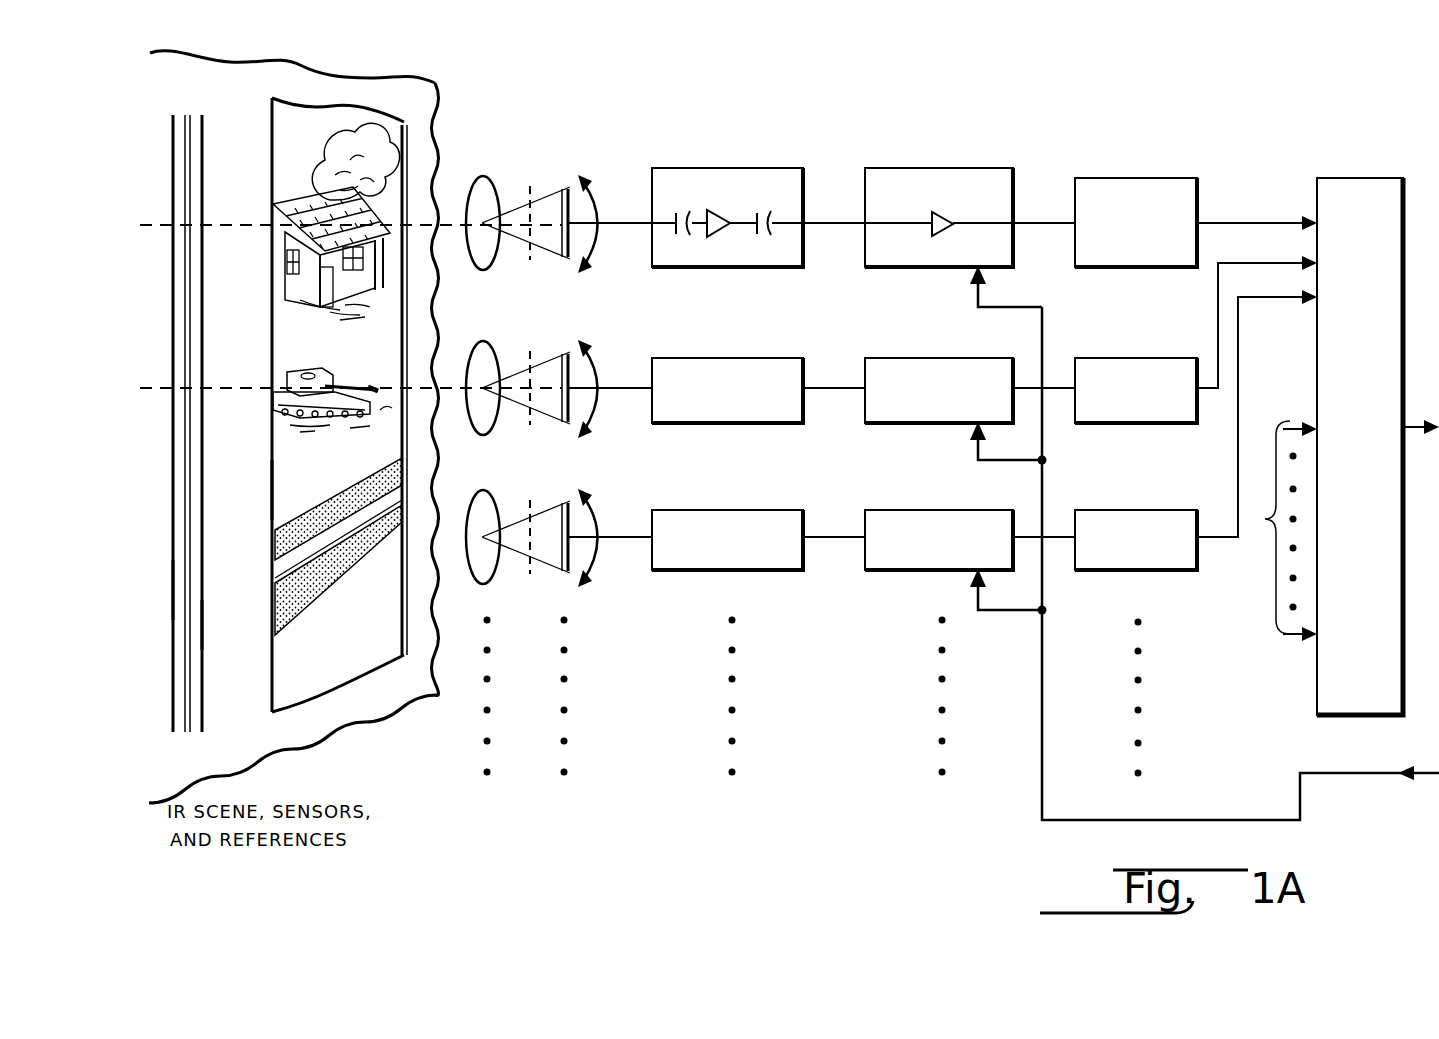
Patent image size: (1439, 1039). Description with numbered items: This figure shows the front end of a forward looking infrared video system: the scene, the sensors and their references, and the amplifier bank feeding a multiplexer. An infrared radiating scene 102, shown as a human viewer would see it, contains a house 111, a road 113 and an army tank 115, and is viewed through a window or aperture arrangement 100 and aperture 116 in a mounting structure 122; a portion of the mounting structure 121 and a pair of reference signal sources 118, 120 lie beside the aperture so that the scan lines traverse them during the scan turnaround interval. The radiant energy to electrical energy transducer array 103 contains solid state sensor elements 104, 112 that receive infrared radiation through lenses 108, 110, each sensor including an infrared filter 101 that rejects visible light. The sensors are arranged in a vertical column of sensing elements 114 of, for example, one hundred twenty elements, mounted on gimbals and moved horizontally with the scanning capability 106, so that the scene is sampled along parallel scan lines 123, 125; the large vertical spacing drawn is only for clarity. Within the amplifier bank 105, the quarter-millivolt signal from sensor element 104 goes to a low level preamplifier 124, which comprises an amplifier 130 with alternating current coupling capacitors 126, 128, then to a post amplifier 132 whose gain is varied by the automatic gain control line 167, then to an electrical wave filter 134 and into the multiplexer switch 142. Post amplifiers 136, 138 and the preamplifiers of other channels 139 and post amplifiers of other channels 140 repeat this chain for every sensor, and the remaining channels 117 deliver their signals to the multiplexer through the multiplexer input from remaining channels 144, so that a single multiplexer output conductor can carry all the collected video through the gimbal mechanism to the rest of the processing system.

The window or aperture arrangement 100 is at (360, 112).
The portion of the mounting structure 121 is at (257, 157).
The infrared radiating scene 102 is at (320, 157).
The scan line 123 is at (246, 205).
The house 111 is at (282, 248).
The army tank 115 is at (278, 372).
The scan line 125 is at (256, 389).
The aperture 116 is at (272, 487).
The reference signal source 118 is at (180, 588).
The reference signal source 120 is at (195, 622).
The road 113 is at (340, 584).
The mounting structure 122 is at (310, 737).
The radiant energy to electrical energy transducer array 103 is at (544, 110).
The sensor element 104 is at (572, 188).
The scanning capability 106 is at (595, 194).
The lens 108 is at (490, 183).
The infrared filter 101 is at (535, 259).
The lens 110 is at (492, 351).
The sensor element 112 is at (568, 368).
The low level preamplifier 124 is at (727, 168).
The capacitor 126 is at (683, 237).
The capacitor 128 is at (768, 237).
The amplifier 130 is at (722, 237).
The amplifier bank 105 is at (895, 110).
The post amplifier 132 is at (968, 168).
The electrical wave filter 134 is at (1162, 178).
The post amplifier 136 is at (918, 358).
The post amplifier 138 is at (910, 510).
The multiplexer switch 142 is at (1355, 178).
The remaining channels 117 is at (1265, 519).
The multiplexer input from remaining channels 144 is at (1298, 737).
The vertical column of sensing elements 114 is at (586, 880).
The preamplifiers of other channels 139 is at (756, 880).
The post amplifiers of other channels 140 is at (963, 880).
The automatic gain control line 167 is at (1045, 670).